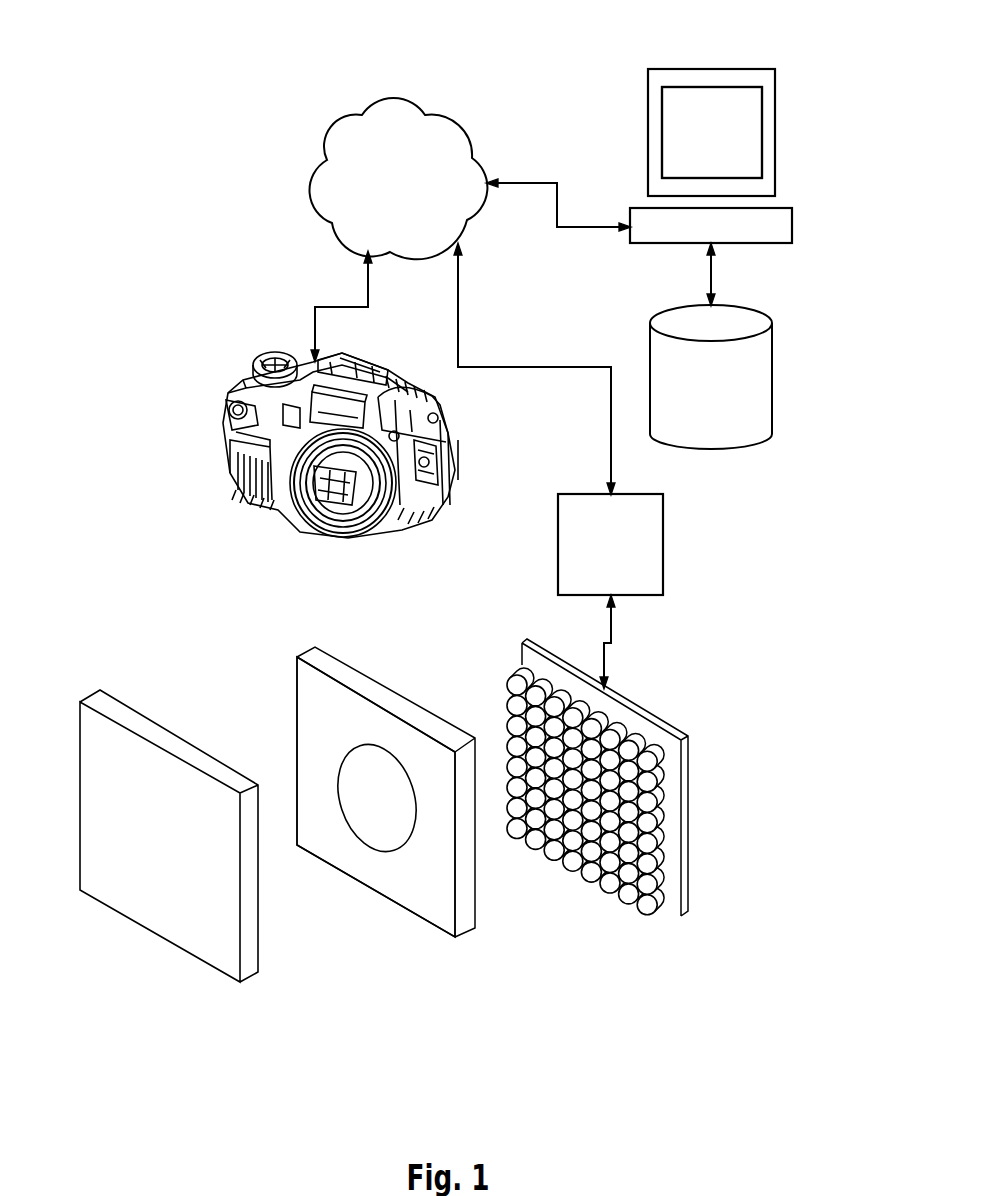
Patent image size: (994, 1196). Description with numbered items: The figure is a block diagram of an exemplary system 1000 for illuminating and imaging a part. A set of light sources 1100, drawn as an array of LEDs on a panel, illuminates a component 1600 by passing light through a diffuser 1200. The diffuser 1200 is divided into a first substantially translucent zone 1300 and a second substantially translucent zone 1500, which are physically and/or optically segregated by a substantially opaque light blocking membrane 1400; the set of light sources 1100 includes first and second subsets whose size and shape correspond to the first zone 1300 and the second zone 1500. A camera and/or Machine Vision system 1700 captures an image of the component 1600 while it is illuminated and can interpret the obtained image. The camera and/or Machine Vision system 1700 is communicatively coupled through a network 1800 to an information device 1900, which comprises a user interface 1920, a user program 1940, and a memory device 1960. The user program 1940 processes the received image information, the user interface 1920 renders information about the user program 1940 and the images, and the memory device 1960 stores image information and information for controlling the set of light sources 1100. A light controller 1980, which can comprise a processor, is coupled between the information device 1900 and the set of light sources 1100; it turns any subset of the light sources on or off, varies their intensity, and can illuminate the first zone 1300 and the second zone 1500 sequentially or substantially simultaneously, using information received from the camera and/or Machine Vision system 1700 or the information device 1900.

The system 1000 is at (75, 114).
The set of light sources 1100 is at (628, 675).
The diffuser 1200 is at (391, 665).
The first substantially translucent zone 1300 is at (336, 713).
The substantially opaque light blocking membrane 1400 is at (378, 855).
The second substantially translucent zone 1500 is at (384, 806).
The component 1600 is at (128, 760).
The camera and/or Machine Vision system 1700 is at (340, 460).
The network 1800 is at (399, 178).
The information device 1900 is at (711, 137).
The user interface 1920 is at (712, 132).
The user program 1940 is at (712, 132).
The memory device 1960 is at (711, 377).
The light controller 1980 is at (610, 544).